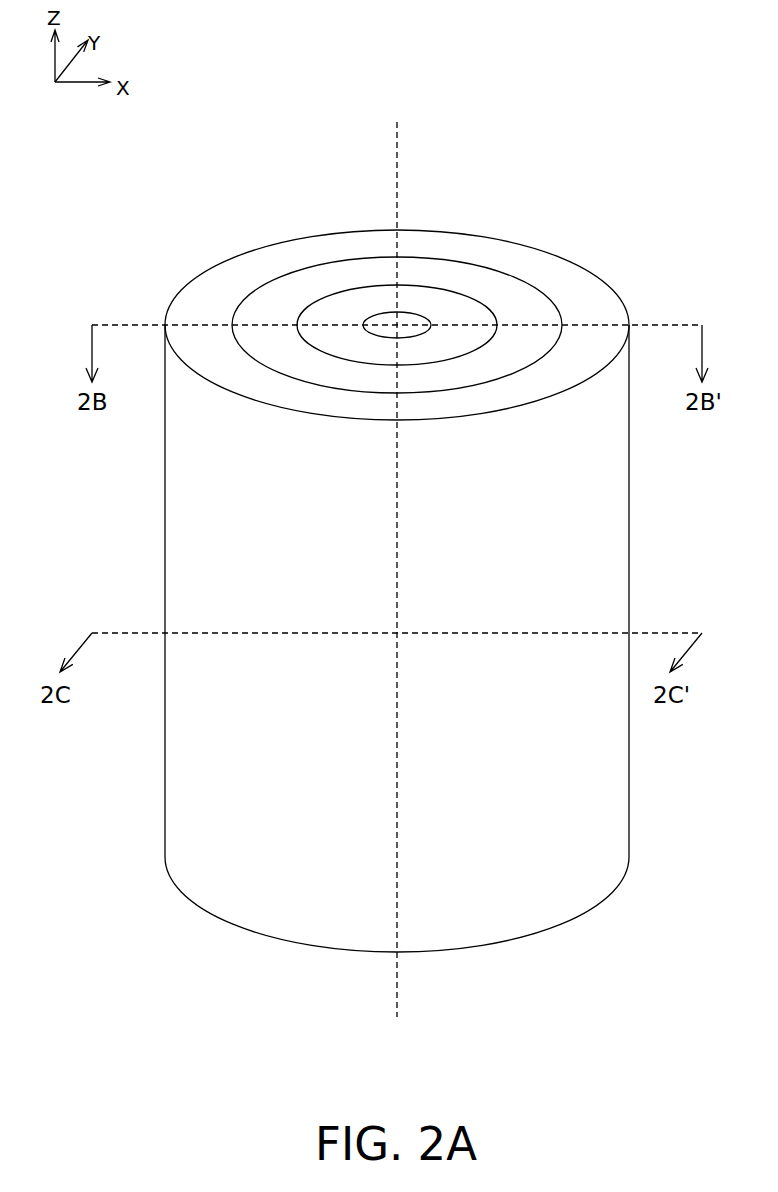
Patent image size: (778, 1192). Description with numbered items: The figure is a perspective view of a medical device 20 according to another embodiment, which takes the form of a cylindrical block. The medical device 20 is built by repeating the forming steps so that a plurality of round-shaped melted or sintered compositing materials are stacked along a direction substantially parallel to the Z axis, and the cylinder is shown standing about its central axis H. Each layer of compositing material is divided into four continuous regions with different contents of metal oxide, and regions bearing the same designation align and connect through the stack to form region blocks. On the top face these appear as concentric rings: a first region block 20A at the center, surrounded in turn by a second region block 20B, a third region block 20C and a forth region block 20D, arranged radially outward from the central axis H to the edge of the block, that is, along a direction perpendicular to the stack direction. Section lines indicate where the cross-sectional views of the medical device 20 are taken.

The medical device 20 is at (367, 552).
The first region block 20A is at (415, 323).
The second region block 20B is at (460, 315).
The third region block 20C is at (525, 313).
The forth region block 20D is at (583, 295).
The central axis H is at (399, 170).